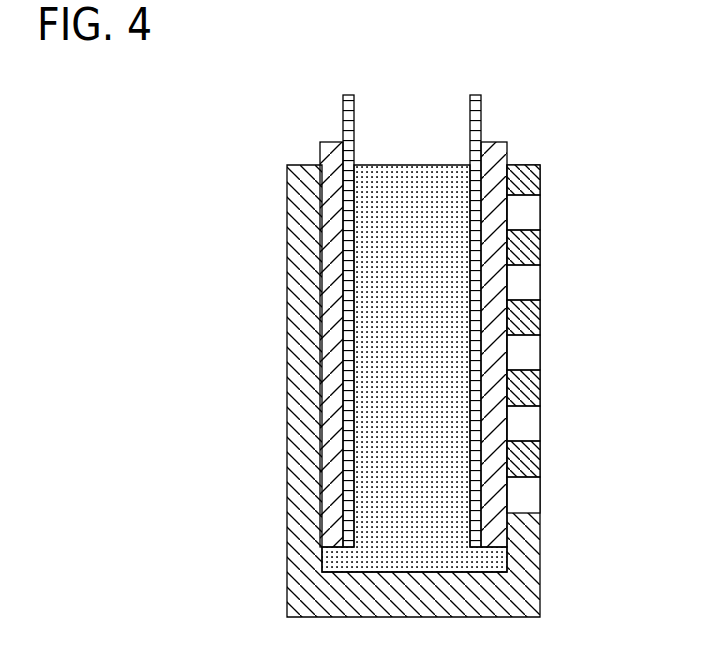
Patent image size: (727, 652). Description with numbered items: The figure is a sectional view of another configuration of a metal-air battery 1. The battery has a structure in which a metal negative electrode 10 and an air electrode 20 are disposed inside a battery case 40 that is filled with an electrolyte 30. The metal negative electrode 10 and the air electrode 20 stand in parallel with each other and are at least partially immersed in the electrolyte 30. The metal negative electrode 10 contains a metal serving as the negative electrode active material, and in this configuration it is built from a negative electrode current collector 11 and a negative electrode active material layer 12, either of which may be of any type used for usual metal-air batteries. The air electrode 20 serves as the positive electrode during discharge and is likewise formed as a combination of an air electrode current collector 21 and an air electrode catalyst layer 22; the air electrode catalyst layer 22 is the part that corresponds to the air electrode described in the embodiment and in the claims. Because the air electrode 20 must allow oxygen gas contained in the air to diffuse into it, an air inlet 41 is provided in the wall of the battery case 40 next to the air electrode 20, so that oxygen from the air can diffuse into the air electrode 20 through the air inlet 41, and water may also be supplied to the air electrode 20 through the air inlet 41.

The metal-air battery 1 is at (213, 257).
The metal negative electrode 10 is at (212, 83).
The negative electrode current collector 11 is at (343, 112).
The negative electrode active material layer 12 is at (320, 152).
The air electrode 20 is at (615, 82).
The air electrode current collector 21 is at (481, 112).
The air electrode catalyst layer 22 is at (507, 152).
The electrolyte 30 is at (415, 167).
The battery case 40 is at (300, 392).
The air inlet 41 is at (532, 372).